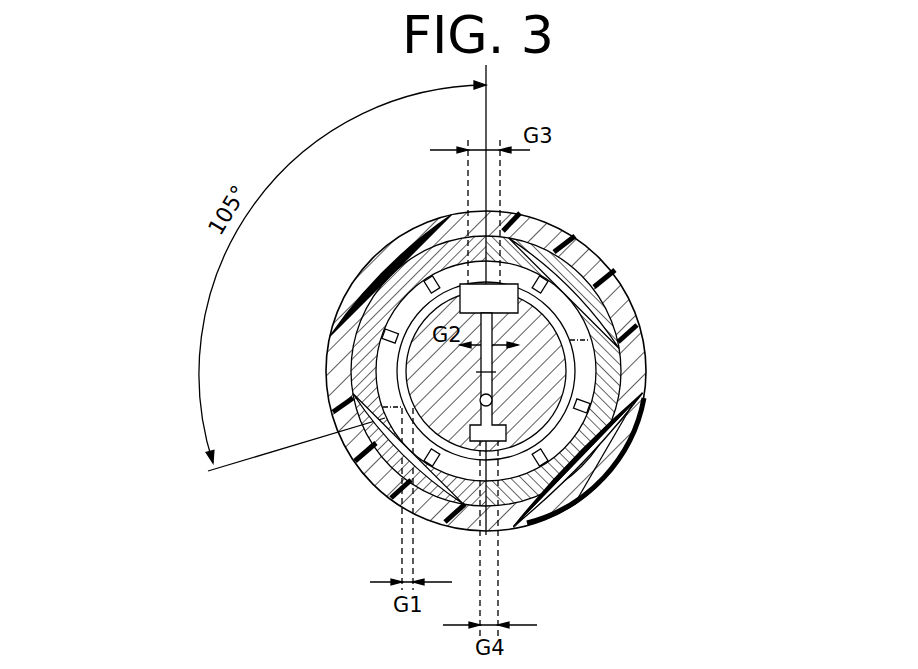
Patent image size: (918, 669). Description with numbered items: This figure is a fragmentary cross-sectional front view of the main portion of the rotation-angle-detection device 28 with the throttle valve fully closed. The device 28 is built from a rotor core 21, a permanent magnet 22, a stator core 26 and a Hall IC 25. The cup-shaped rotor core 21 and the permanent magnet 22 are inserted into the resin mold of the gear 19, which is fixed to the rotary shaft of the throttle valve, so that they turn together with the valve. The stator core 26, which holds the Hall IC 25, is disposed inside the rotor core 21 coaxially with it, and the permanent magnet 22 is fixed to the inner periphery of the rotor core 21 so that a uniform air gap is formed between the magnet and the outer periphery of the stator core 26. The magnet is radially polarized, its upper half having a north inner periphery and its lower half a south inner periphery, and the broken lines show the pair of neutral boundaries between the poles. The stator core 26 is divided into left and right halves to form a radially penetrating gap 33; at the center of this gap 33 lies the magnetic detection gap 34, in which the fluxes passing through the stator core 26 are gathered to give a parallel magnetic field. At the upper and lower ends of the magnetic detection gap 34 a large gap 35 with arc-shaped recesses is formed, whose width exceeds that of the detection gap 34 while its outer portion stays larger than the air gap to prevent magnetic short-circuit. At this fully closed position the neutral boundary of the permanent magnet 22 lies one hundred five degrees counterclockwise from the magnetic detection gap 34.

The gear 19 is at (537, 215).
The rotation-angle-detection device 28 is at (587, 237).
The rotor core 21 is at (593, 308).
The permanent magnet 22 is at (393, 278).
The Hall IC 25 is at (487, 385).
The stator core 26 is at (535, 388).
The large gap 35 is at (508, 337).
The magnetic detection gap 34 is at (505, 433).
The gap 33 is at (543, 518).